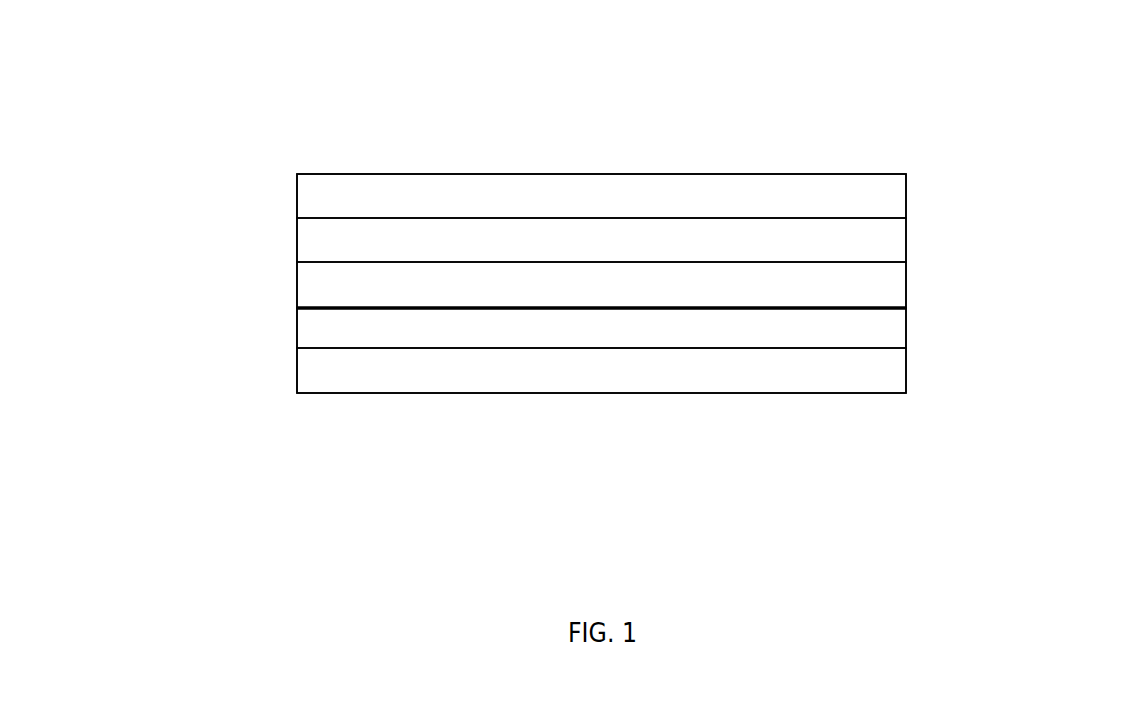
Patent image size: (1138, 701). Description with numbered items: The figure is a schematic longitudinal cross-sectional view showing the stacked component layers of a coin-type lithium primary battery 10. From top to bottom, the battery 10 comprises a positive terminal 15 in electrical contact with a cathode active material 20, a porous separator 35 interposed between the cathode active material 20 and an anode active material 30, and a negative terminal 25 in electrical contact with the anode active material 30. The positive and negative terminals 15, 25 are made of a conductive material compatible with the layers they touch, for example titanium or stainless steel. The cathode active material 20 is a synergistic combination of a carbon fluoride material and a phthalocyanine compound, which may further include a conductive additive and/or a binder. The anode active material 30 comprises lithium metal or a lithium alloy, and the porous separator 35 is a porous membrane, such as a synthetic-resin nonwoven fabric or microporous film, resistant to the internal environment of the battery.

The coin-type lithium primary battery 10 is at (289, 115).
The positive terminal 15 is at (914, 196).
The cathode active material 20 is at (289, 238).
The porous separator 35 is at (914, 286).
The anode active material 30 is at (289, 327).
The negative terminal 25 is at (914, 376).